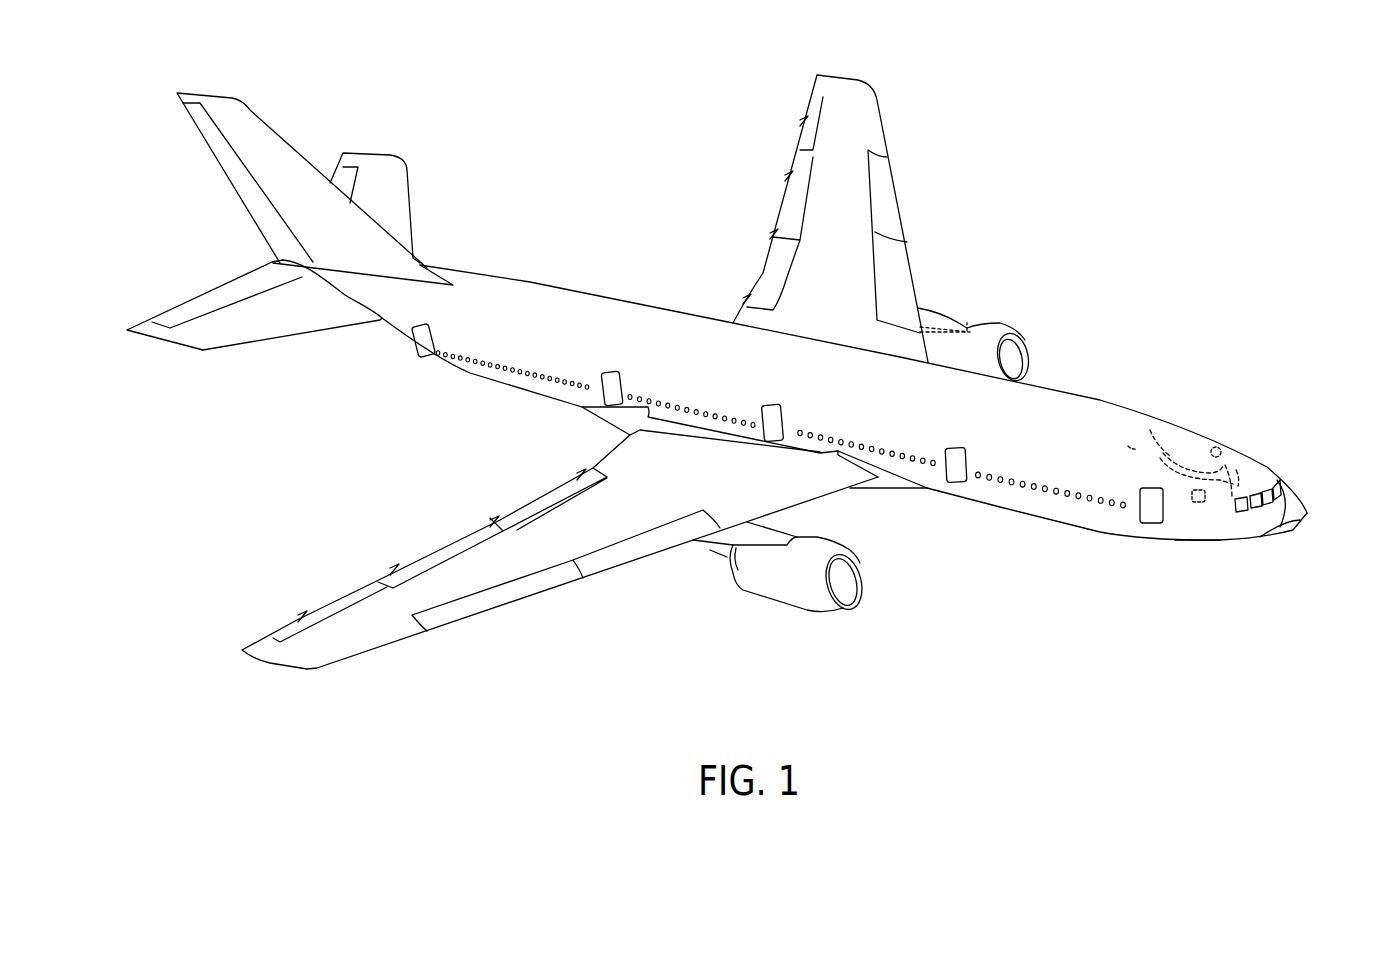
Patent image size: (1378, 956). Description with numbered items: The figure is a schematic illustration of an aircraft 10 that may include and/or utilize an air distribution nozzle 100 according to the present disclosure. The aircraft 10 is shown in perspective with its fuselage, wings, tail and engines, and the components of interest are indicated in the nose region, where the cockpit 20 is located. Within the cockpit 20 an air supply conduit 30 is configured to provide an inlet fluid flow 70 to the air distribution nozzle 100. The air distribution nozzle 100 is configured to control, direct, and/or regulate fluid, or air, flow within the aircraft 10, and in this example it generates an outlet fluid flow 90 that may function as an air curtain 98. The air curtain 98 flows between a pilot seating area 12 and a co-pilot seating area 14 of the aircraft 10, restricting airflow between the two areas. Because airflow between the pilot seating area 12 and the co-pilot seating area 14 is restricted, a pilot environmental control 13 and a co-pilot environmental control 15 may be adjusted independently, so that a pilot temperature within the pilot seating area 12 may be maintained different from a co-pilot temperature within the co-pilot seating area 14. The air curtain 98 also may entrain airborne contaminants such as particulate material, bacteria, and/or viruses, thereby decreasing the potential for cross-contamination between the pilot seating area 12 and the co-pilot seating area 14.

The aircraft 10 is at (1070, 141).
The pilot seating area 12 is at (1198, 448).
The pilot environmental control 13 is at (1233, 522).
The co-pilot seating area 14 is at (1198, 522).
The co-pilot environmental control 15 is at (1205, 503).
The cockpit 20 is at (1161, 438).
The air supply conduit 30 is at (1186, 455).
The inlet fluid flow 70 is at (1160, 455).
The outlet fluid flow 90 is at (1243, 523).
The air curtain 98 is at (1243, 485).
The air distribution nozzle 100 is at (1243, 487).